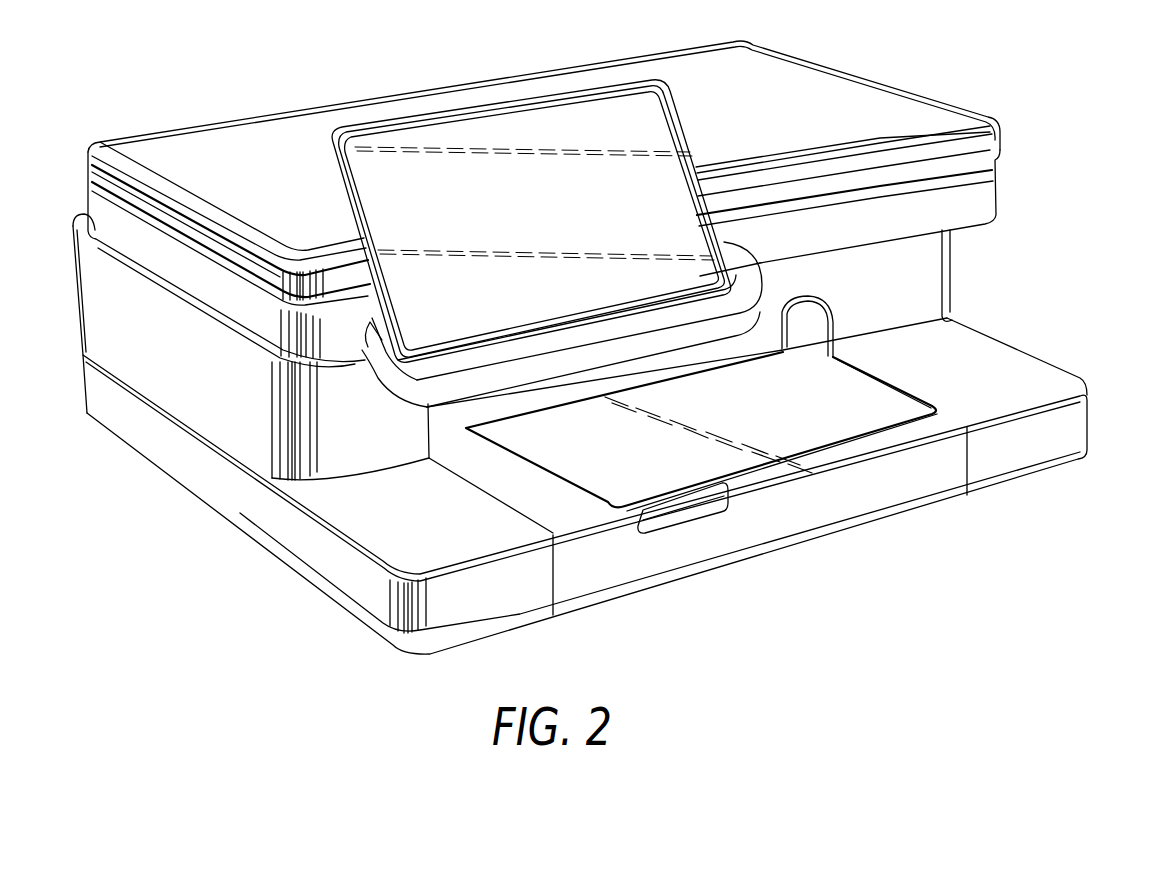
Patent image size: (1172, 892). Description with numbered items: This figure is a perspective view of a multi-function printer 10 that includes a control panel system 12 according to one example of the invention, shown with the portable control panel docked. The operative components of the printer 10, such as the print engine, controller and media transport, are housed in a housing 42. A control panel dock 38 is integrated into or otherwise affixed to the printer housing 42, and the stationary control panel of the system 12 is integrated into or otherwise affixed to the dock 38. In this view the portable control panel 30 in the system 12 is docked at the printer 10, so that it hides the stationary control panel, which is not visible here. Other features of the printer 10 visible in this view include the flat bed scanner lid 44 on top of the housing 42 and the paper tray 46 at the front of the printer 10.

The multi-function printer 10 is at (1030, 257).
The control panel system 12 is at (747, 238).
The portable control panel 30 is at (663, 120).
The control panel dock 38 is at (387, 382).
The housing 42 is at (987, 200).
The flat bed scanner lid 44 is at (838, 90).
The paper tray 46 is at (877, 413).